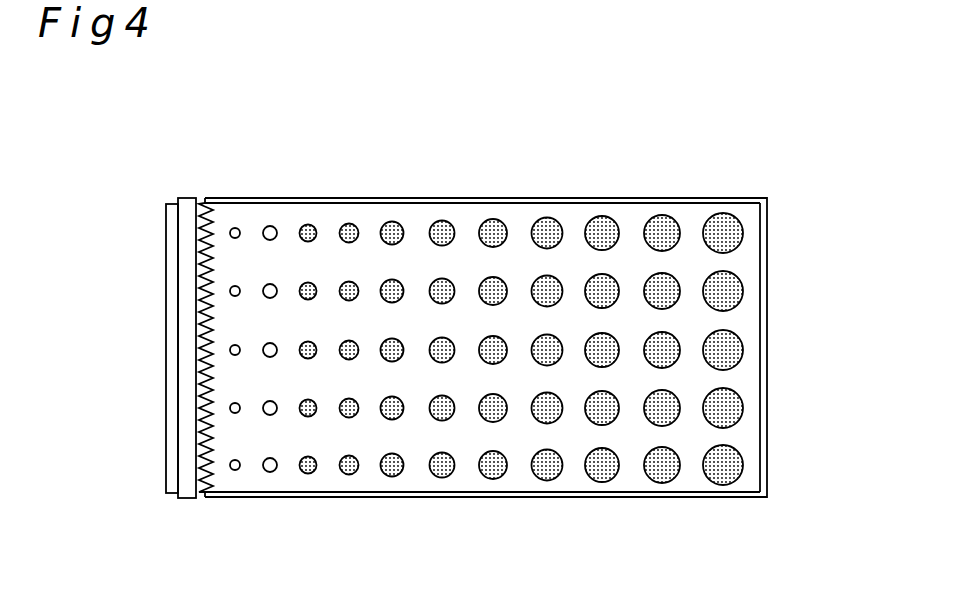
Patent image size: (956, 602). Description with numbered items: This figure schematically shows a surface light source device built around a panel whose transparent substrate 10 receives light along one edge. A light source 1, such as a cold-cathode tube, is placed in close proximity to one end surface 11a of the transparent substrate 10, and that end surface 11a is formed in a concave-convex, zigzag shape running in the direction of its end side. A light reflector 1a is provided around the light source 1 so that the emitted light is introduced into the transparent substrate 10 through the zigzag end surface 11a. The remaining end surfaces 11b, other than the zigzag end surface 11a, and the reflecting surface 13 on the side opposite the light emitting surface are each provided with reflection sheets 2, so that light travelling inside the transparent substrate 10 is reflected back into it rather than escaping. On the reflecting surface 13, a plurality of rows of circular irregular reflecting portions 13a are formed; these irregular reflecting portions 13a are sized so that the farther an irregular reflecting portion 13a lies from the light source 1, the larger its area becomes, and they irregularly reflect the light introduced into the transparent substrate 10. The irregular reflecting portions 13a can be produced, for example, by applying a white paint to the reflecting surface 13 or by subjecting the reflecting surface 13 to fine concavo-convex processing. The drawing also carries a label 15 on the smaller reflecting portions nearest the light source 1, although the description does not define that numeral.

The light source 1 is at (188, 415).
The light reflector 1a is at (167, 353).
The reflection sheets 2 is at (570, 198).
The transparent substrate 10 is at (539, 350).
The end surface 11a is at (207, 227).
The end surfaces 11b is at (745, 218).
The reflecting surface 13 is at (691, 457).
The irregular reflecting portions 13a is at (743, 291).
The light diffusing dots 15 is at (493, 220).